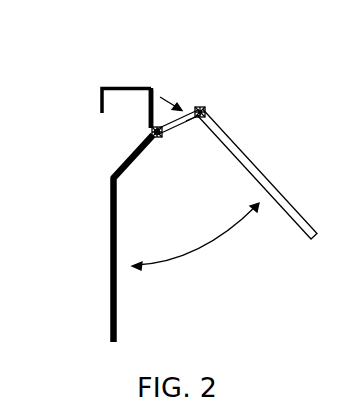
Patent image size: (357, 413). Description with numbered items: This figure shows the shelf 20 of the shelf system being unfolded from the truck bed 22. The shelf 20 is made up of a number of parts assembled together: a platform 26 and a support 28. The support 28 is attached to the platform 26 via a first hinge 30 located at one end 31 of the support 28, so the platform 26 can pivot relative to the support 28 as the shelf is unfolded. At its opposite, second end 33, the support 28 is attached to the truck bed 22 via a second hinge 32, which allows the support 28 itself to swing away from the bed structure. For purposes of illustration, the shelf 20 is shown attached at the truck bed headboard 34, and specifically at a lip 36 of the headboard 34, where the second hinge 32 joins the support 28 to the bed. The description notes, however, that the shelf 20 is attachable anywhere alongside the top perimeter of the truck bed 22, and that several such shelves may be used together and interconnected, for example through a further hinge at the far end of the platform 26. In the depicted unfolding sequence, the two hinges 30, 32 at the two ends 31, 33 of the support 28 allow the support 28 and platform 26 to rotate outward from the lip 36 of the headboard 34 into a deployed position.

The shelf 20 is at (235, 127).
The truck bed 22 is at (100, 96).
The platform 26 is at (270, 181).
The support 28 is at (179, 131).
The first hinge 30 is at (200, 106).
The one end of the support 31 is at (190, 105).
The second hinge 32 is at (156, 139).
The second end of the support 33 is at (161, 139).
The truck bed headboard 34 is at (150, 87).
The lip 36 is at (151, 133).